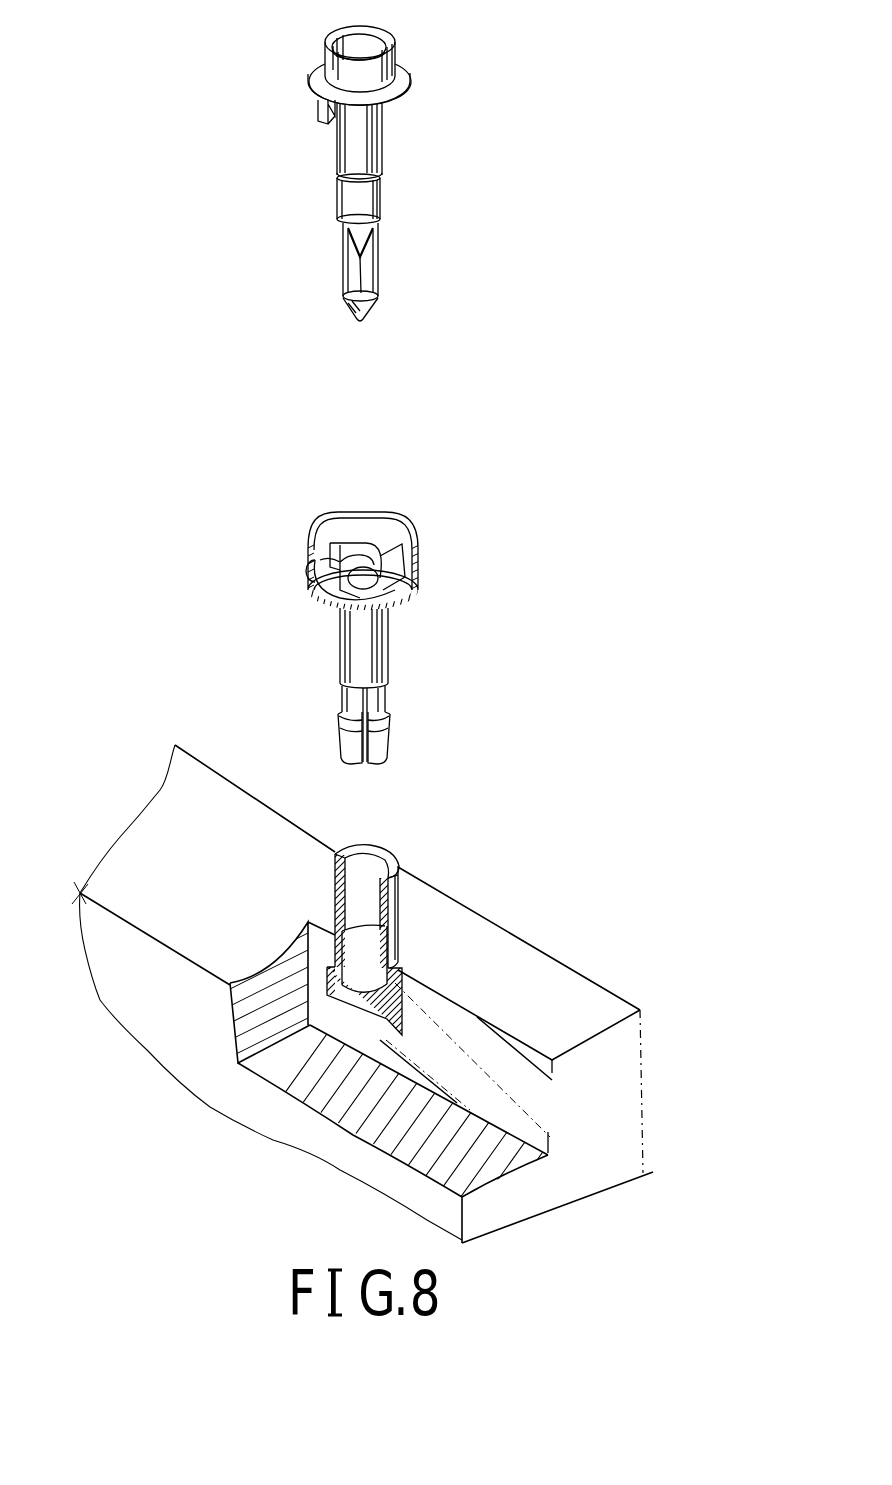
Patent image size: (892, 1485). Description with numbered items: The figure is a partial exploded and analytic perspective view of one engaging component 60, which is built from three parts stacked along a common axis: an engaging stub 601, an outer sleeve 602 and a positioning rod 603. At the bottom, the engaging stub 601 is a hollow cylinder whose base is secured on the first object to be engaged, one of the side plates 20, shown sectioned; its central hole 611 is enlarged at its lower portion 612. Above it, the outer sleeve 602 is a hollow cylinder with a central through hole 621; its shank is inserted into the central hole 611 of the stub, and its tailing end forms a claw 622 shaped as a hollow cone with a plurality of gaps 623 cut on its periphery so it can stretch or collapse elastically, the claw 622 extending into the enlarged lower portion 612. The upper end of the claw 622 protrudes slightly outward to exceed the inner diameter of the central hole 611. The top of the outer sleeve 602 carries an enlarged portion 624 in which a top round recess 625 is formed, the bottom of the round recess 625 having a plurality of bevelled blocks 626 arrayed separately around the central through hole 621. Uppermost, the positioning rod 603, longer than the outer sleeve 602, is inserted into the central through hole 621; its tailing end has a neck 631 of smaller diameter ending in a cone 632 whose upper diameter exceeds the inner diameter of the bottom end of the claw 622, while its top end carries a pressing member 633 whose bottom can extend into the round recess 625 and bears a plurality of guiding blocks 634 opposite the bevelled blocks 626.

The side plate 20 is at (645, 1043).
The engaging component 60 is at (630, 417).
The engaging stub 601 is at (365, 981).
The central hole 611 is at (370, 867).
The enlarged lower portion 612 is at (360, 971).
The outer sleeve 602 is at (391, 616).
The central through hole 621 is at (320, 600).
The claw 622 is at (390, 732).
The gaps 623 is at (363, 765).
The enlarged portion 624 is at (402, 514).
The round recess 625 is at (348, 528).
The bevelled blocks 626 is at (314, 583).
The positioning rod 603 is at (377, 171).
The neck 631 is at (355, 265).
The cone 632 is at (376, 307).
The pressing member 633 is at (400, 55).
The guiding blocks 634 is at (320, 115).